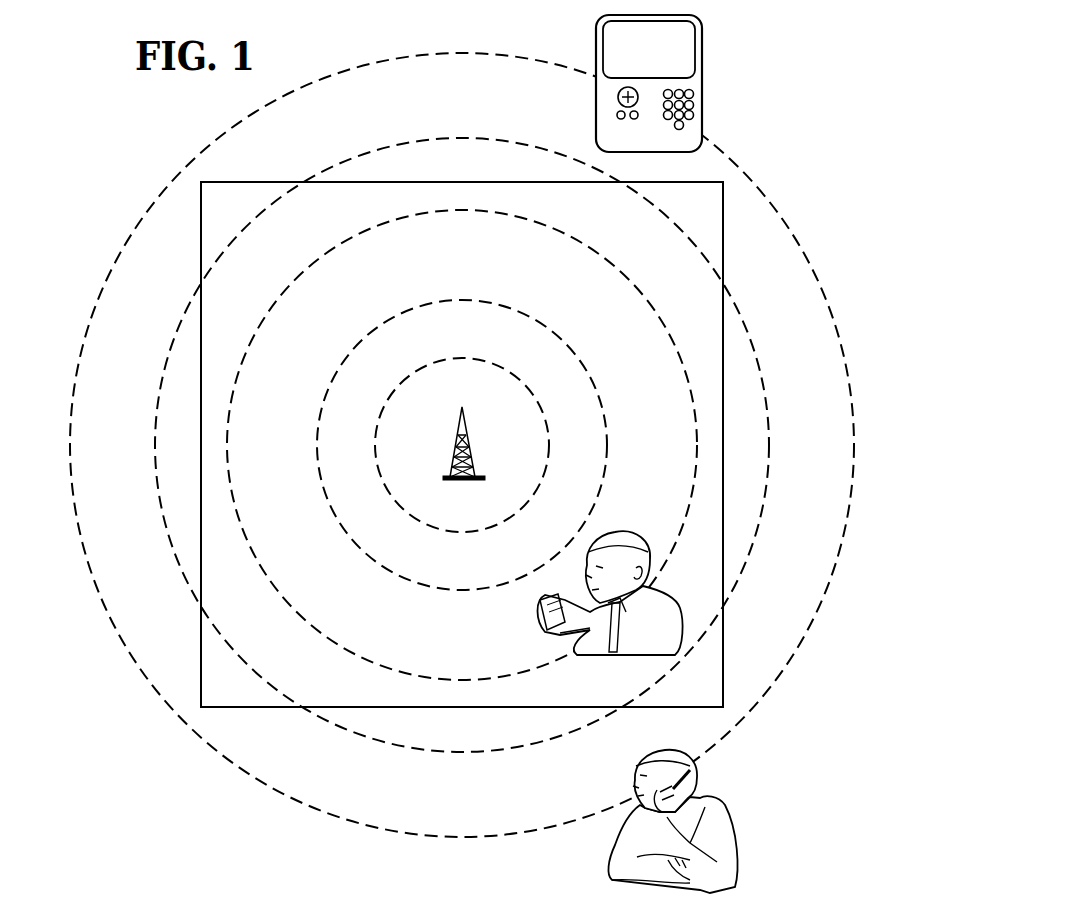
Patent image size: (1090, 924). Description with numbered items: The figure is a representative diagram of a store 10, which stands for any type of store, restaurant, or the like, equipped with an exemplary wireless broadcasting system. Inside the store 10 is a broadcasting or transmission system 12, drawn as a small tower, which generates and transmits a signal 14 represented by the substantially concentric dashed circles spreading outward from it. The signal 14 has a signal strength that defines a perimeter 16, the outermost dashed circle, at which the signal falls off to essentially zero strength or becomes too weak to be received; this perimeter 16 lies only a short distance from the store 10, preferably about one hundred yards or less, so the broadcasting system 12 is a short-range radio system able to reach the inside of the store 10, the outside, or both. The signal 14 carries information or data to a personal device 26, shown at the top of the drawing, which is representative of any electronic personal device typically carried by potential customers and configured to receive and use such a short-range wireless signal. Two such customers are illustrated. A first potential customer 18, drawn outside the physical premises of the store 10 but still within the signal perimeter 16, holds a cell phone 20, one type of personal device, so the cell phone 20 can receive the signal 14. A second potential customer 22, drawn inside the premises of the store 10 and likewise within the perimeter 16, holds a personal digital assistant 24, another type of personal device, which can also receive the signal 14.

The store 10 is at (371, 182).
The broadcasting system 12 is at (467, 425).
The signal 14 is at (437, 362).
The perimeter 16 is at (389, 58).
The first potential customer 18 is at (725, 796).
The cell phone 20 is at (669, 772).
The second potential customer 22 is at (634, 527).
The personal digital assistant (PDA) 24 is at (538, 608).
The personal device 26 is at (703, 63).